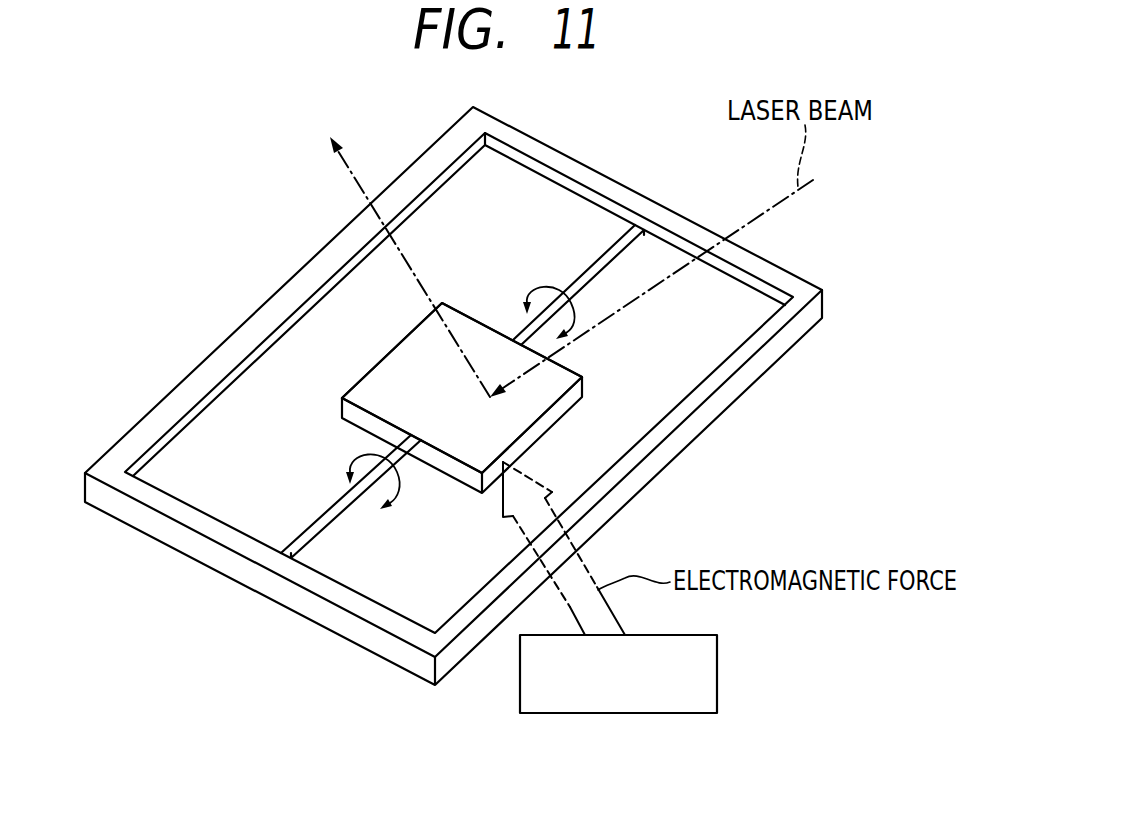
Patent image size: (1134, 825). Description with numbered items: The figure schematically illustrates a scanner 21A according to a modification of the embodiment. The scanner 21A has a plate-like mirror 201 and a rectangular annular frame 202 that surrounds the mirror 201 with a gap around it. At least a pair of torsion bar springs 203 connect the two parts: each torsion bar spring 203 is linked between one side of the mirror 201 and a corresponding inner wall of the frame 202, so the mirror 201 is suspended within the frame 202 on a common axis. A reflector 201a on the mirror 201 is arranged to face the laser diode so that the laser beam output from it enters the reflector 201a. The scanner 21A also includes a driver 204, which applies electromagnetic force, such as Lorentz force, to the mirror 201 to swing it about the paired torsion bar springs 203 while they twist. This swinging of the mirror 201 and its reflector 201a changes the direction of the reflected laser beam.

The scanner 21A is at (845, 256).
The mirror 201 is at (568, 429).
The reflector 201a is at (562, 369).
The frame 202 is at (772, 351).
The torsion bar springs 203 is at (622, 242).
The driver 204 is at (717, 663).